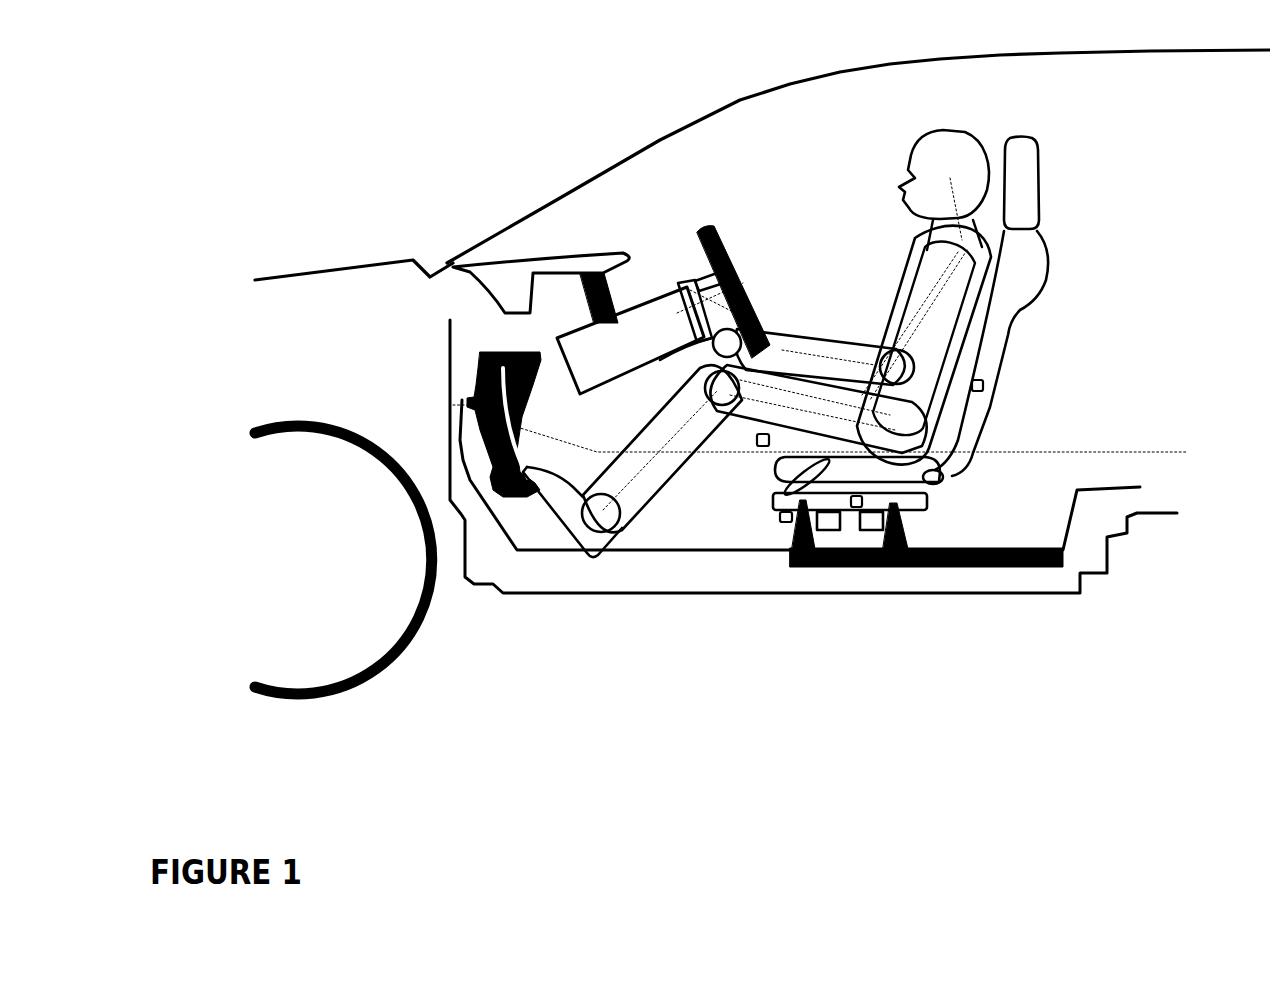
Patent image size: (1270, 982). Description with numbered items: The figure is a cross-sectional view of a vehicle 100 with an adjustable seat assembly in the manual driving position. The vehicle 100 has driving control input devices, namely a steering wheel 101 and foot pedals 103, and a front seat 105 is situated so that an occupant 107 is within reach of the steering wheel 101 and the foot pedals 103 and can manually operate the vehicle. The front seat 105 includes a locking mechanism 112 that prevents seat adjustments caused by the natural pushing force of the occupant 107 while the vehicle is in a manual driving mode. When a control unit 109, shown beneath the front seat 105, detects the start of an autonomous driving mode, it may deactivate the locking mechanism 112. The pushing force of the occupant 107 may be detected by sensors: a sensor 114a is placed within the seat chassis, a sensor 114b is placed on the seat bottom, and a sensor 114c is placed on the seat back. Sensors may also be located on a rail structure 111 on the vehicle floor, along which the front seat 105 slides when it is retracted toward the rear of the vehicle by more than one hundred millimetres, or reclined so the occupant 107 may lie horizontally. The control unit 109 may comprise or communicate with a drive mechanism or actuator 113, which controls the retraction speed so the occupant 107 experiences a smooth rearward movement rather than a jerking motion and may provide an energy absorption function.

The vehicle 100 is at (403, 190).
The steering wheel 101 is at (716, 240).
The foot pedals 103 is at (551, 468).
The front seat 105 is at (1035, 138).
The occupant 107 is at (944, 128).
The control unit 109 is at (917, 540).
The rail structure 111 is at (848, 568).
The locking mechanism 112 is at (863, 502).
The drive mechanism or actuator 113 is at (793, 540).
The sensor 114a is at (785, 524).
The sensor 114b is at (757, 440).
The sensor 114c is at (984, 386).